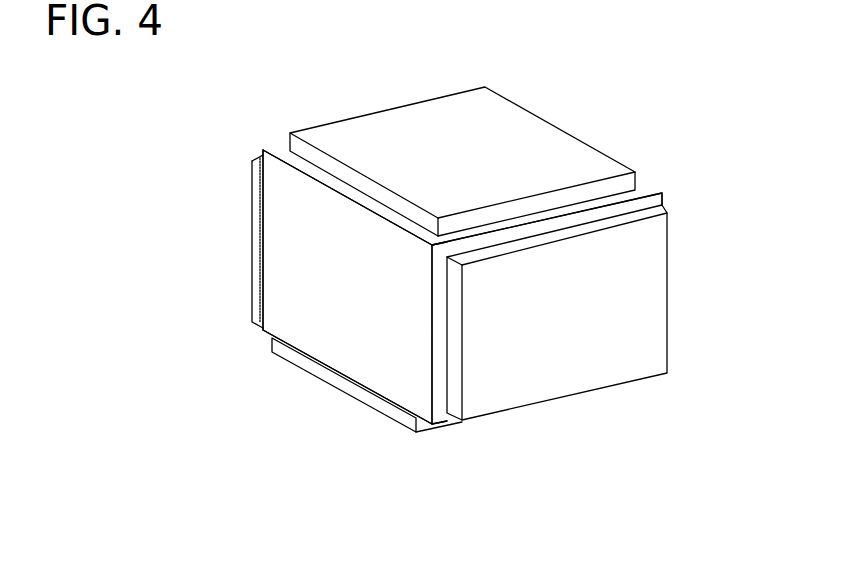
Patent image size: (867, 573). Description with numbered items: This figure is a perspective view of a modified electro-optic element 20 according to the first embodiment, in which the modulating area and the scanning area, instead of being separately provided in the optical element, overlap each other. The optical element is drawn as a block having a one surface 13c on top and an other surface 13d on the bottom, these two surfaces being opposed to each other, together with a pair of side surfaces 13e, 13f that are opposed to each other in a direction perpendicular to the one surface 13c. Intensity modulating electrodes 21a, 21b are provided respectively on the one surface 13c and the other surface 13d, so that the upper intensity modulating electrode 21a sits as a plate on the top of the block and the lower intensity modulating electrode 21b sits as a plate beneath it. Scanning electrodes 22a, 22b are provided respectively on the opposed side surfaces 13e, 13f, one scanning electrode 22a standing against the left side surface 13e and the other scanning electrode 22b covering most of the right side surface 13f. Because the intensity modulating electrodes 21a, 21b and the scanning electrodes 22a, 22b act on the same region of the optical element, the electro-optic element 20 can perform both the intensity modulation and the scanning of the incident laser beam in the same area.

The electro-optic element 20 is at (706, 84).
The one surface 13c is at (650, 184).
The other surface 13d is at (427, 433).
The surface 13e is at (252, 228).
The surface 13f is at (438, 376).
The intensity modulating electrode 21a is at (313, 124).
The intensity modulating electrode 21b is at (338, 392).
The scanning electrode 22a is at (252, 192).
The scanning electrode 22b is at (658, 308).